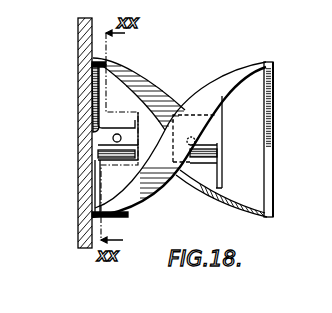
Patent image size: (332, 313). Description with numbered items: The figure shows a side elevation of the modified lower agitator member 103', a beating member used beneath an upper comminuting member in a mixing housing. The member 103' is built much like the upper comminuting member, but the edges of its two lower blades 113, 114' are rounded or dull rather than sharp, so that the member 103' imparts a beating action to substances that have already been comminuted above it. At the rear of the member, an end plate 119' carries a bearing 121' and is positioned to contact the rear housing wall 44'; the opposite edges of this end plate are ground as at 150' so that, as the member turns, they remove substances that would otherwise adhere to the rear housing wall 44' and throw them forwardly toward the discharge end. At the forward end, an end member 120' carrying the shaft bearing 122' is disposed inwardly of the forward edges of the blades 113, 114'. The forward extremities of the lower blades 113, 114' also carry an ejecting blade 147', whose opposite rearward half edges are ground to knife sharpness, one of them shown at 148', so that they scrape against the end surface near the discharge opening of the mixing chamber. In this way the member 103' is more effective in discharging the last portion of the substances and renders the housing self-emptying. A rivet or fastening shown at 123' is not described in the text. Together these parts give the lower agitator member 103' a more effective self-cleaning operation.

The rear housing wall 44' is at (69, 133).
The ground edges of end plate 150' is at (73, 97).
The lower blade 113 is at (126, 72).
The lower blade 114' is at (179, 148).
The lower agitator member 103' is at (294, 125).
The knife-sharp ground edge of ejecting blade 148' is at (292, 107).
The ejecting blade 147' is at (295, 139).
The bearing 121' is at (118, 112).
The end plate 119' is at (87, 181).
The rivet 123' is at (152, 141).
The shaft bearing 122' is at (215, 142).
The end member 120' is at (227, 165).